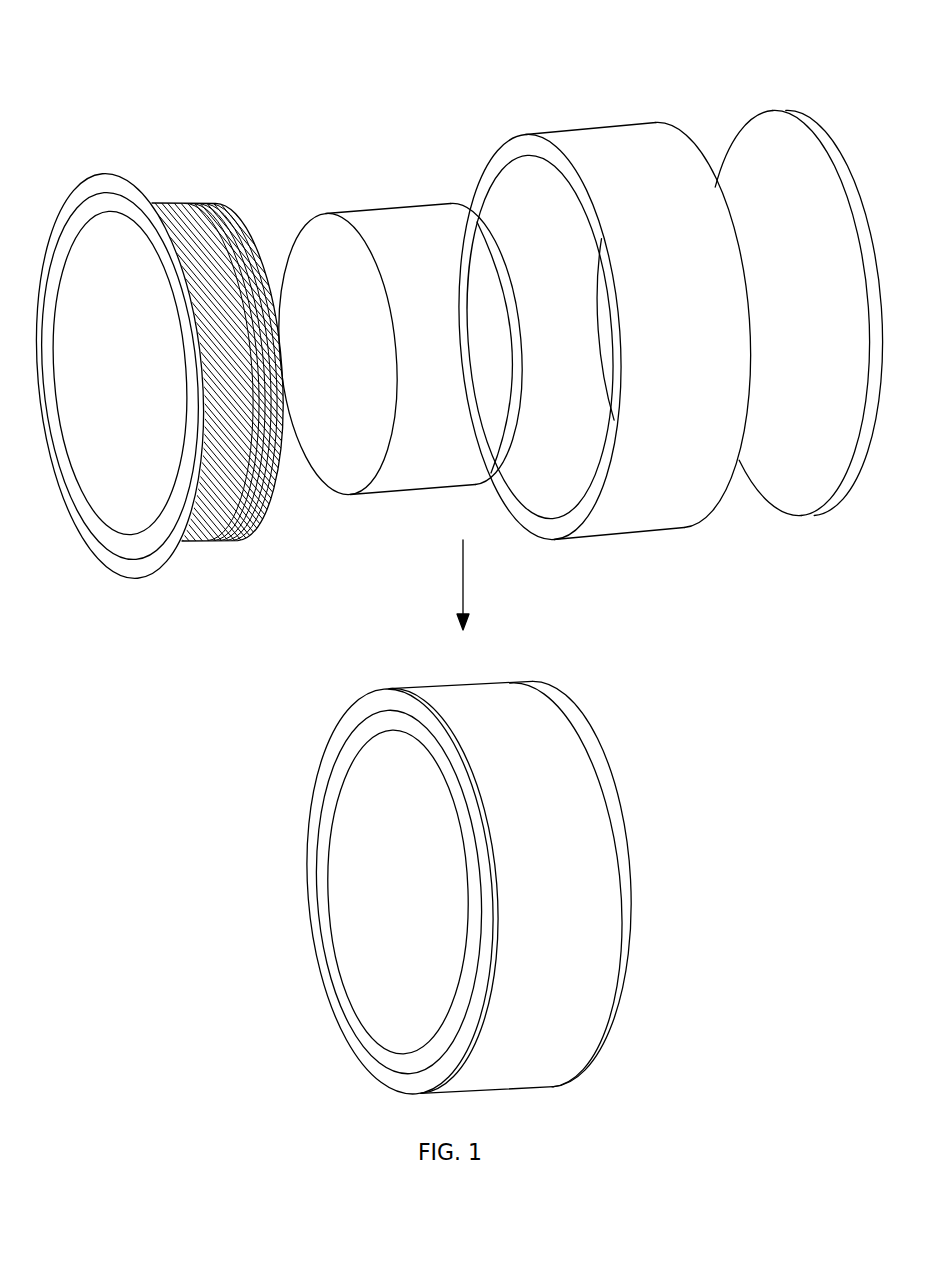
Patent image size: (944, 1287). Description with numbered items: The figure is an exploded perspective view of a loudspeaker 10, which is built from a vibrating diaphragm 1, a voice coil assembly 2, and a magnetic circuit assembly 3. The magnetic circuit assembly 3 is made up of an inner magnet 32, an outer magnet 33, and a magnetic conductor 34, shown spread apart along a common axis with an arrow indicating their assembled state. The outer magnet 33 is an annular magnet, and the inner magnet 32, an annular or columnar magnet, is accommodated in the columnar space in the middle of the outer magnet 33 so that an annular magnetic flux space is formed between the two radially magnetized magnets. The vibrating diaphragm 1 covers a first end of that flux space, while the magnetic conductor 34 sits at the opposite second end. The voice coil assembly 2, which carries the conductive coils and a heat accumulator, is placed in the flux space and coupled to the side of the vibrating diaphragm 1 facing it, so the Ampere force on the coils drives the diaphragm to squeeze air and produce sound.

The loudspeaker 10 is at (94, 46).
The vibrating diaphragm 1 is at (95, 237).
The voice coil assembly 2 is at (205, 226).
The magnetic circuit assembly 3 is at (765, 63).
The inner magnet 32 is at (427, 218).
The outer magnet 33 is at (599, 166).
The magnetic conductor 34 is at (756, 162).